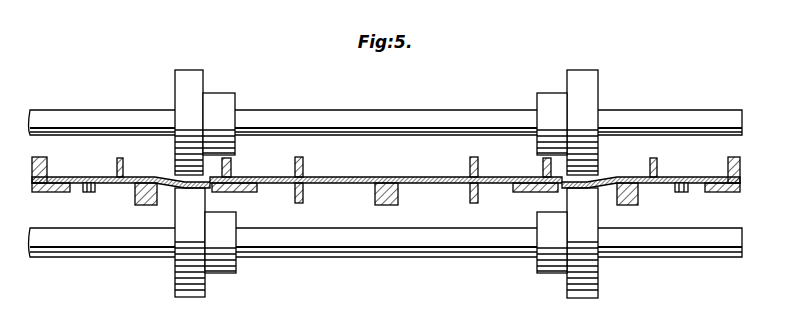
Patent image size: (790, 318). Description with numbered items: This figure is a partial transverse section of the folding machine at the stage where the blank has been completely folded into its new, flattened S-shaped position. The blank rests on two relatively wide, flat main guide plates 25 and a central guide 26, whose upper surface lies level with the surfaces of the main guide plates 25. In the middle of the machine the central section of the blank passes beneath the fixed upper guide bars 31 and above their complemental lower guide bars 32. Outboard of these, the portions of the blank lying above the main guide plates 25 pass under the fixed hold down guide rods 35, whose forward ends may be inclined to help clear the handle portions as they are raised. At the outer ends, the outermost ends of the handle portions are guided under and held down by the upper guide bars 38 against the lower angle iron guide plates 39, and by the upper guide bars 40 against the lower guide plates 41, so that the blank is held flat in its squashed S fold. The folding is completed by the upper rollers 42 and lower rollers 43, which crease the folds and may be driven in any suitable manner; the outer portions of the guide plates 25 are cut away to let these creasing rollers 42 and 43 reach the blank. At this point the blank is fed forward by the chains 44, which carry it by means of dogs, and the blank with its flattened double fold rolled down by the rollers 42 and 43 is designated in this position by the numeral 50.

The main guide plate 25 is at (247, 192).
The central guide 26 is at (388, 204).
The upper guide bar 31 is at (303, 165).
The lower guide bar 32 is at (303, 195).
The hold down guide rod 35 is at (231, 166).
The upper guide bar 38 is at (40, 158).
The lower angle iron guide plate 39 is at (45, 192).
The upper guide bar 40 is at (118, 168).
The lower guide plate 41 is at (142, 200).
The upper roller 42 is at (192, 78).
The lower roller 43 is at (176, 288).
The chain 44 is at (89, 193).
The blank with flattened double fold 50 is at (428, 177).